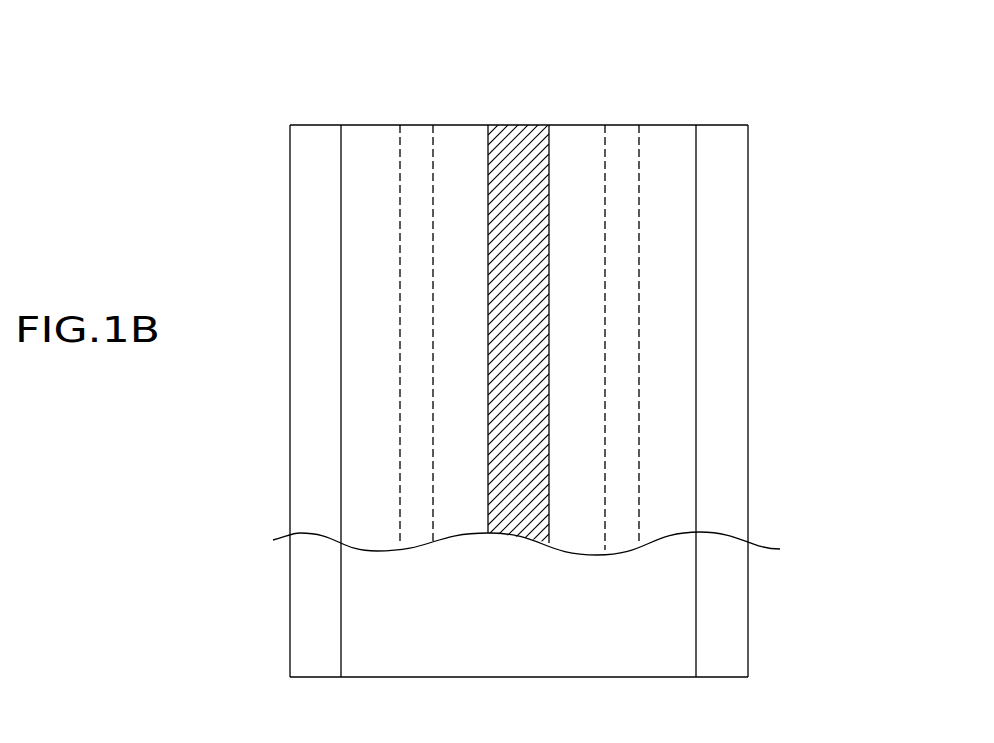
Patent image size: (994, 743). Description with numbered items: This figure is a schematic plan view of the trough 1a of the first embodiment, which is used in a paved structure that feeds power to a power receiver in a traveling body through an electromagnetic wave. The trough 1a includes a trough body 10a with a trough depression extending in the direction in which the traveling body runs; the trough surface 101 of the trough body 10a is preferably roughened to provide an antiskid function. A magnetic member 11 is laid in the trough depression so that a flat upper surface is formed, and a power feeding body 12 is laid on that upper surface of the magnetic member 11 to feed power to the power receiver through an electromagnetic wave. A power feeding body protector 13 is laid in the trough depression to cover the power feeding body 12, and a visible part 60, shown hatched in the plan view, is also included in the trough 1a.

The trough 1a is at (798, 112).
The trough body 10a is at (290, 292).
The trough surface 101 is at (303, 398).
The power feeding body 12 is at (420, 142).
The visible part 60 is at (520, 132).
The power feeding body protector 13 is at (652, 466).
The magnetic member 11 is at (513, 650).